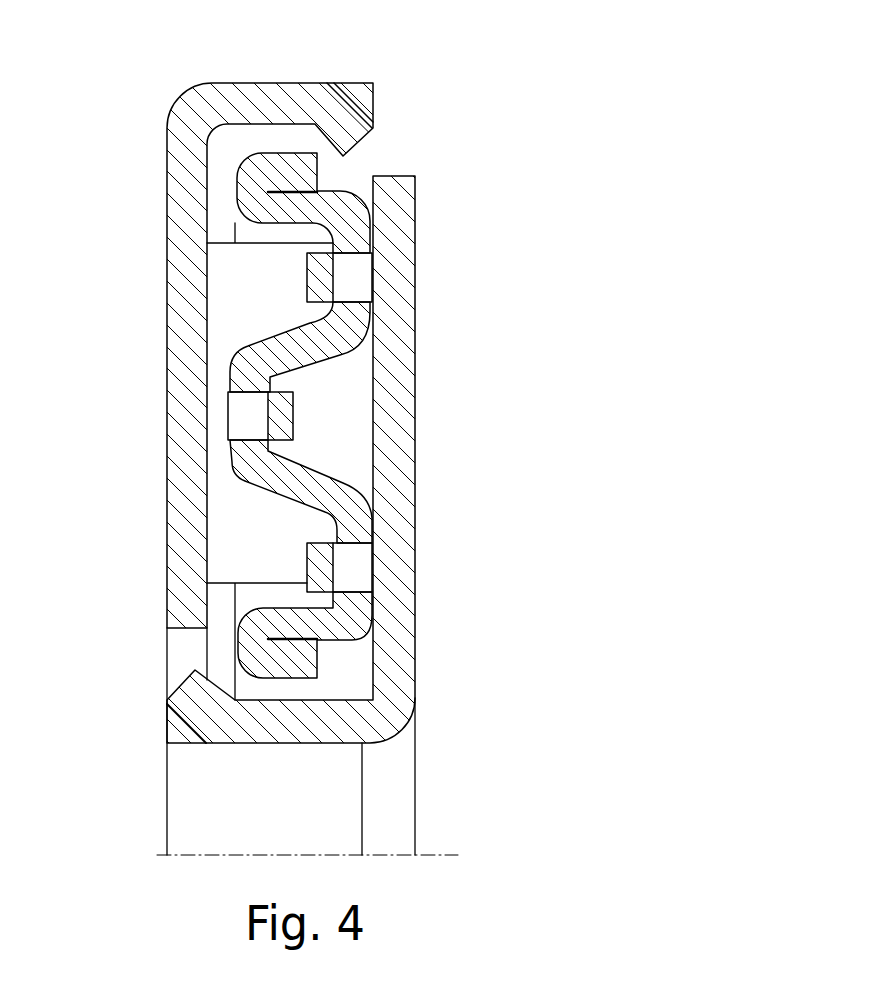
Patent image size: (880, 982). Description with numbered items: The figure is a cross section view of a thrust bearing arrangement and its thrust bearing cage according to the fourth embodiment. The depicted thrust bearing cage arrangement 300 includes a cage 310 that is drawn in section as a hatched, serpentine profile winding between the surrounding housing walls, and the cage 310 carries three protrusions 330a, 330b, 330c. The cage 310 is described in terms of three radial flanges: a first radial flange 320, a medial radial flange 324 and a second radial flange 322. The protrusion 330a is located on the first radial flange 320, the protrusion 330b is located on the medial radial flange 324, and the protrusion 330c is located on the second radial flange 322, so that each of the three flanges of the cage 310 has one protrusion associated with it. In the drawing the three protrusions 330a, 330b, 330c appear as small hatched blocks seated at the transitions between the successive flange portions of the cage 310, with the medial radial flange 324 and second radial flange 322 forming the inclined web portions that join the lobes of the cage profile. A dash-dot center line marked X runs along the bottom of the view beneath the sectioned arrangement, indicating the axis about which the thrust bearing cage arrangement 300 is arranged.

The thrust bearing cage arrangement 300 is at (170, 82).
The cage 310 is at (283, 160).
The first radial flange 320 is at (360, 243).
The second radial flange 322 is at (352, 531).
The medial radial flange 324 is at (236, 367).
The protrusion 330a is at (323, 285).
The protrusion 330b is at (290, 404).
The protrusion 330c is at (310, 547).
The axis of rotation X is at (445, 853).